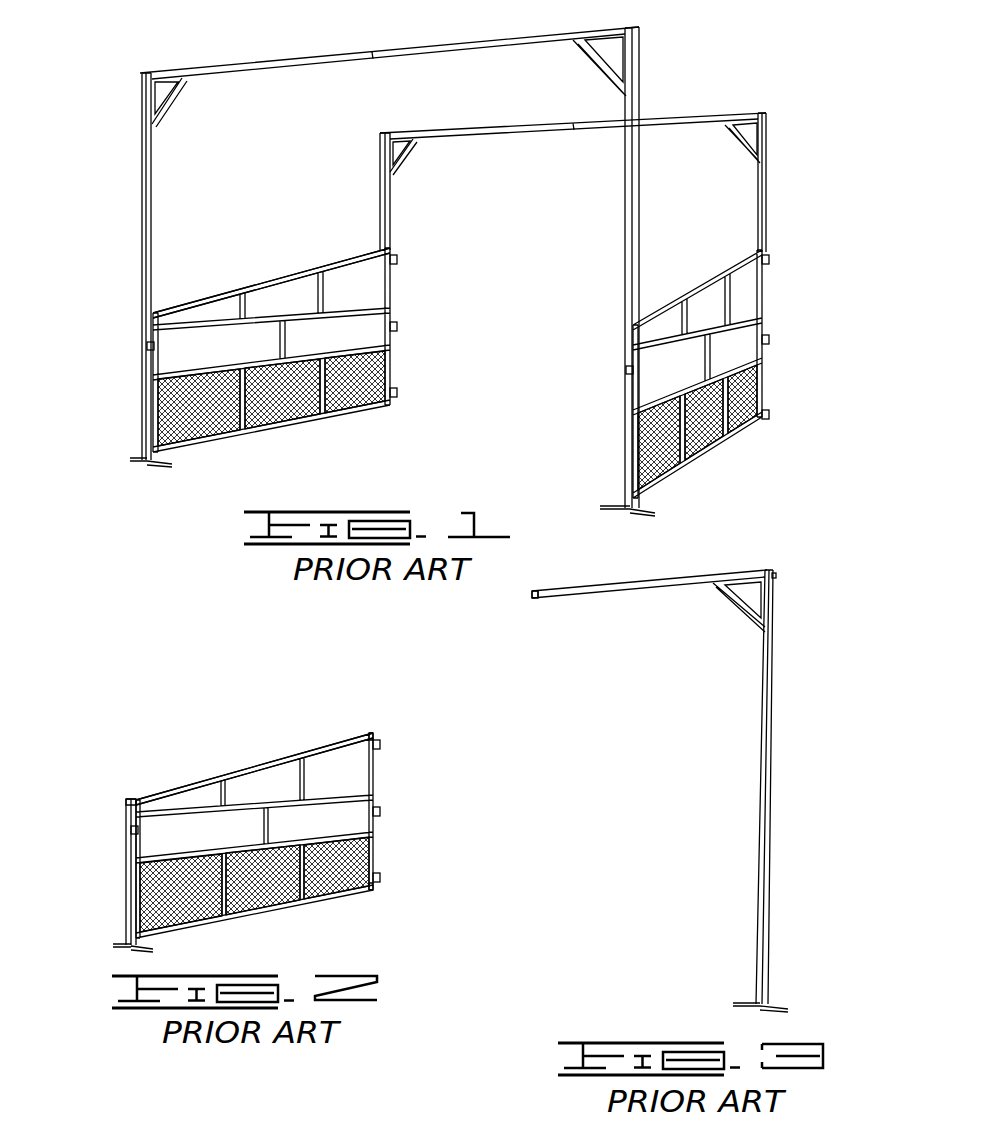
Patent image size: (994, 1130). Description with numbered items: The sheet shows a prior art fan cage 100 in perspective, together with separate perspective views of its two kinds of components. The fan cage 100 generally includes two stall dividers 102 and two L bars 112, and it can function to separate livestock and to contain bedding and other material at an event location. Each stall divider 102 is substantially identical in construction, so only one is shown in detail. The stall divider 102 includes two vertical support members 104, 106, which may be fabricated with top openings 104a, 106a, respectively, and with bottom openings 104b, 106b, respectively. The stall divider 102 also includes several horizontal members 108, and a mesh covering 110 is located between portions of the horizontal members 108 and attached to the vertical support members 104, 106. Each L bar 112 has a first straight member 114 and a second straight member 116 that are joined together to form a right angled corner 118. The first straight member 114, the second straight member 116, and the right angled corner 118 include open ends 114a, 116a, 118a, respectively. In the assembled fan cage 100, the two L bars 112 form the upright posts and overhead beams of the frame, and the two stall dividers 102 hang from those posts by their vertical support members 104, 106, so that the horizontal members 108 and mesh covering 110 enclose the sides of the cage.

In FIG. 1, the fan cage 100 is at (790, 52).
In FIG. 2, the stall divider 102 is at (185, 694).
In FIG. 1, the vertical support member 104 is at (142, 402).
In FIG. 2, the vertical support member 104 is at (127, 858).
In FIG. 2, the top opening 104a is at (126, 800).
In FIG. 2, the bottom opening 104b is at (125, 950).
In FIG. 1, the vertical support member 106 is at (393, 290).
In FIG. 2, the vertical support member 106 is at (376, 782).
In FIG. 2, the top opening 106a is at (372, 733).
In FIG. 2, the bottom opening 106b is at (378, 888).
In FIG. 1, the horizontal member 108 is at (283, 276).
In FIG. 2, the horizontal member 108 is at (300, 752).
In FIG. 1, the mesh covering 110 is at (212, 432).
In FIG. 2, the mesh covering 110 is at (268, 905).
In FIG. 3, the L bar 112 is at (622, 776).
In FIG. 1, the first straight member 114 is at (214, 65).
In FIG. 3, the first straight member 114 is at (620, 594).
In FIG. 3, the open end 114a is at (532, 596).
In FIG. 1, the second straight member 116 is at (142, 245).
In FIG. 3, the second straight member 116 is at (773, 813).
In FIG. 3, the open end 116a is at (748, 1008).
In FIG. 1, the right angled corner 118 is at (139, 72).
In FIG. 3, the right angled corner 118 is at (771, 570).
In FIG. 3, the open end 118a is at (776, 576).